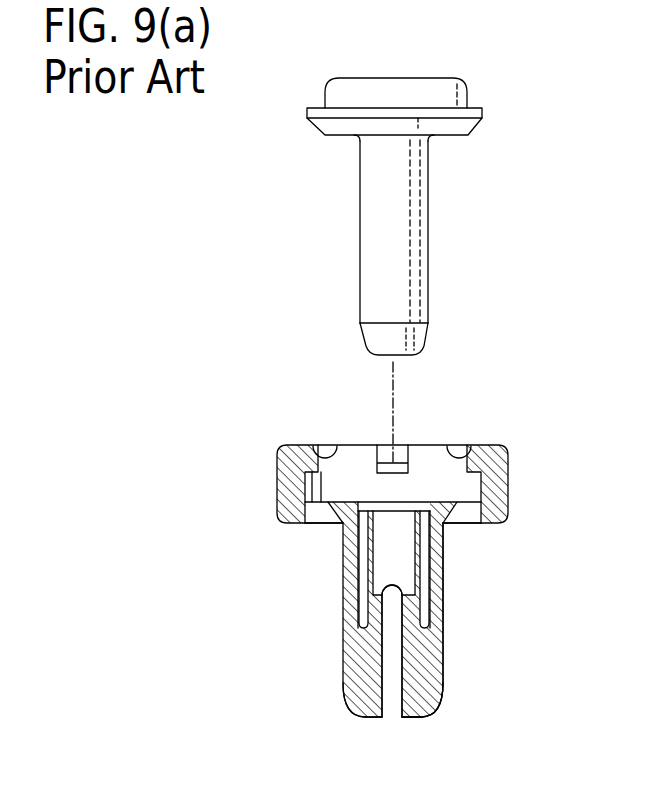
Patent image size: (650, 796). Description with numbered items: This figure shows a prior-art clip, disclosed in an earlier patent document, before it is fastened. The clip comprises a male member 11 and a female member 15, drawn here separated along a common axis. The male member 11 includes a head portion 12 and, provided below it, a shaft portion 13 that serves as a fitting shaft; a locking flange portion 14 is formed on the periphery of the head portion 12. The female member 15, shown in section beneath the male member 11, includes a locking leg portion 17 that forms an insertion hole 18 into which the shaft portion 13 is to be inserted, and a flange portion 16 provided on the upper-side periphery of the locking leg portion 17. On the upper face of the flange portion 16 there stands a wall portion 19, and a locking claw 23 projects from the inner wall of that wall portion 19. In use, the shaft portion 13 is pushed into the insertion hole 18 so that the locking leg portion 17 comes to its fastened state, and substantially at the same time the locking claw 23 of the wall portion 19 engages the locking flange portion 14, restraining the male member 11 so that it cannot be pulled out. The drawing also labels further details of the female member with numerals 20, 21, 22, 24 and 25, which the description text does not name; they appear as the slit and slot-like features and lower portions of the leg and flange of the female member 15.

The male member 11 is at (352, 246).
The head portion 12 is at (419, 92).
The shaft portion 13 is at (430, 242).
The locking flange portion 14 is at (306, 115).
The female member 15 is at (462, 613).
The flange portion 16 is at (337, 525).
The locking leg portion 17 is at (444, 640).
The insertion hole 18 is at (366, 556).
The wall portion 19 is at (510, 478).
The hollow bore 20 is at (375, 641).
The slit 21 is at (392, 698).
The leg tip 22 is at (363, 694).
The locking claw 23 is at (331, 445).
The lower head wall 24 is at (470, 512).
The slot 25 is at (364, 600).